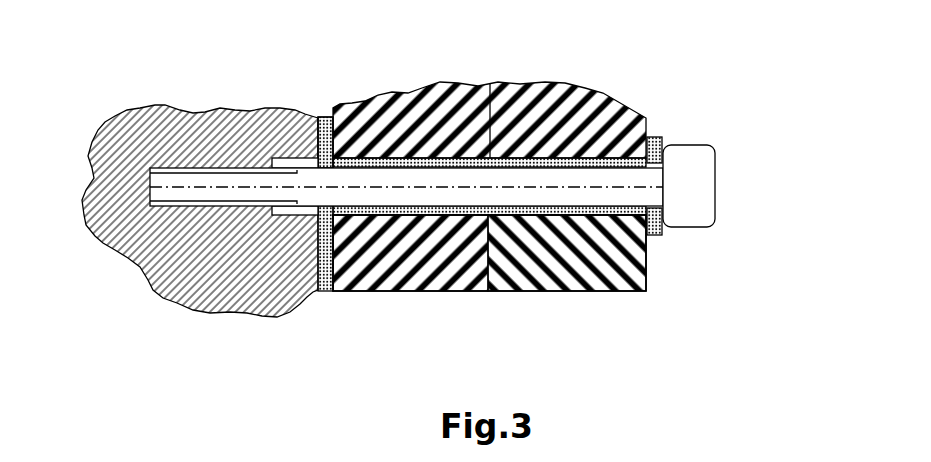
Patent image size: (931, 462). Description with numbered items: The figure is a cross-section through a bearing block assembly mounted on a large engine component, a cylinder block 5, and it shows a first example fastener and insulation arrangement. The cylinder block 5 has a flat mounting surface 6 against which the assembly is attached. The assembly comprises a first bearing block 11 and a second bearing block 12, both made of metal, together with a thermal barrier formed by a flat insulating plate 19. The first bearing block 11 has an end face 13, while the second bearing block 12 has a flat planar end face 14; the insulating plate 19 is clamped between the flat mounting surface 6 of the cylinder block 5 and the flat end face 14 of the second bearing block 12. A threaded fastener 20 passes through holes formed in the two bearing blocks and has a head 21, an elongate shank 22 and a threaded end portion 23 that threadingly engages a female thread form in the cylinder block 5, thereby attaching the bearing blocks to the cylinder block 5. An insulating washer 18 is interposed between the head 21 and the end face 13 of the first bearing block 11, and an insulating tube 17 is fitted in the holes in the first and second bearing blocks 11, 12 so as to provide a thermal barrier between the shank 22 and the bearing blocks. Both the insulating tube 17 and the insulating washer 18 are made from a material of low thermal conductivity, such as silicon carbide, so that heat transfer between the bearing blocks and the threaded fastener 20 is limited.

The cylinder block 5 is at (103, 253).
The flat mounting surface 6 is at (327, 117).
The first bearing block 11 is at (590, 292).
The second bearing block 12 is at (390, 291).
The end face 13 is at (647, 262).
The flat planar end face 14 is at (335, 255).
The insulating tube 17 is at (408, 155).
The insulating washer 18 is at (660, 137).
The flat insulating plate 19 is at (320, 291).
The threaded fastener 20 is at (687, 133).
The head 21 is at (732, 125).
The elongate shank 22 is at (550, 150).
The threaded end portion 23 is at (205, 166).